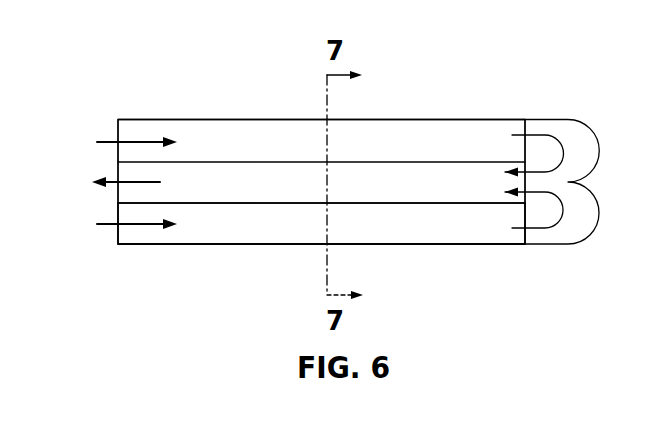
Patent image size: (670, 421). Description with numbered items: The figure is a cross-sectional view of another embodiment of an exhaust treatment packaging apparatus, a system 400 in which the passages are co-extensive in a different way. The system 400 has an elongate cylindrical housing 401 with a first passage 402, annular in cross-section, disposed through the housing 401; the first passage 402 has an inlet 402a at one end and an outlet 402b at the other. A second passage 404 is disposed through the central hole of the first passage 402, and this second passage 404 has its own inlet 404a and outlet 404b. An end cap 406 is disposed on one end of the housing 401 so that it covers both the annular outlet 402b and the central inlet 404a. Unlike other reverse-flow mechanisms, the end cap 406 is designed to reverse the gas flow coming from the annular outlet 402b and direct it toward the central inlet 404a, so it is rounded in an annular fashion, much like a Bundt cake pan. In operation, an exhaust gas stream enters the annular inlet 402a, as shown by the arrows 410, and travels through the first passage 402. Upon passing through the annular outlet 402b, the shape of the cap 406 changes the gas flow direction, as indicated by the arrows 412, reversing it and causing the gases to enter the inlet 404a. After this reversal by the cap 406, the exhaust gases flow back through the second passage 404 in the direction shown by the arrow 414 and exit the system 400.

The system 400 is at (132, 58).
The housing 401 is at (410, 119).
The first passage 402 is at (384, 232).
The inlet 402a is at (117, 237).
The outlet 402b is at (527, 238).
The second passage 404 is at (382, 192).
The inlet 404a is at (515, 166).
The outlet 404b is at (118, 167).
The end cap 406 is at (597, 213).
The arrows 410 is at (105, 225).
The arrows 412 is at (558, 242).
The arrow 414 is at (160, 183).